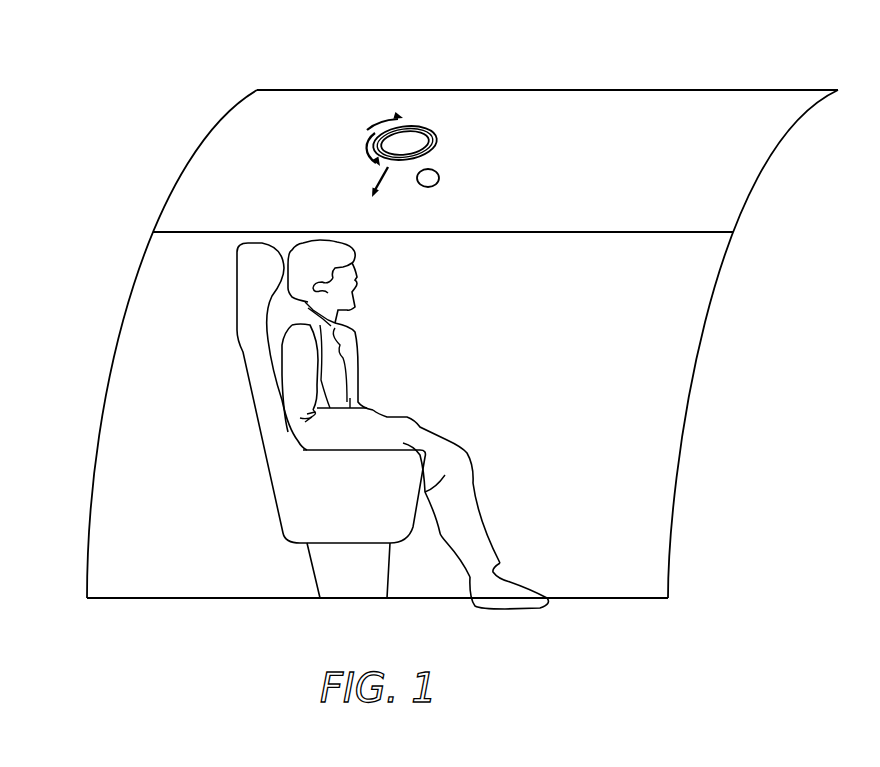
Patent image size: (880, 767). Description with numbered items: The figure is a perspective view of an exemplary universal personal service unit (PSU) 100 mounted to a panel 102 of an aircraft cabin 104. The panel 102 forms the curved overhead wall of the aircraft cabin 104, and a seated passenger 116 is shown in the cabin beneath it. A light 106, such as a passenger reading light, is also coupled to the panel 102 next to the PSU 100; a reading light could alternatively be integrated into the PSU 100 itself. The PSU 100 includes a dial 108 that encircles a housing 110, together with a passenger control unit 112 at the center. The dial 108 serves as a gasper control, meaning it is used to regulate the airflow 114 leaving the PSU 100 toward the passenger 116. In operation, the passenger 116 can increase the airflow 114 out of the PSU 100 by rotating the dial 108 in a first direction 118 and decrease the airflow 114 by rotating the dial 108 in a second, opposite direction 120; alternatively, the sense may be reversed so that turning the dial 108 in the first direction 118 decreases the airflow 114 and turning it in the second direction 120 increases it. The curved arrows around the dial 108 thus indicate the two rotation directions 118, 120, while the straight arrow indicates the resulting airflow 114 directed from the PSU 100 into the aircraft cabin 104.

The universal personal service unit (PSU) 100 is at (361, 111).
The panel 102 is at (642, 158).
The aircraft cabin 104 is at (185, 300).
The light 106 is at (440, 176).
The dial 108 is at (437, 140).
The housing 110 is at (430, 132).
The passenger control unit 112 is at (412, 140).
The airflow 114 is at (370, 168).
The passenger 116 is at (357, 282).
The first direction 118 is at (383, 123).
The second direction 120 is at (363, 150).